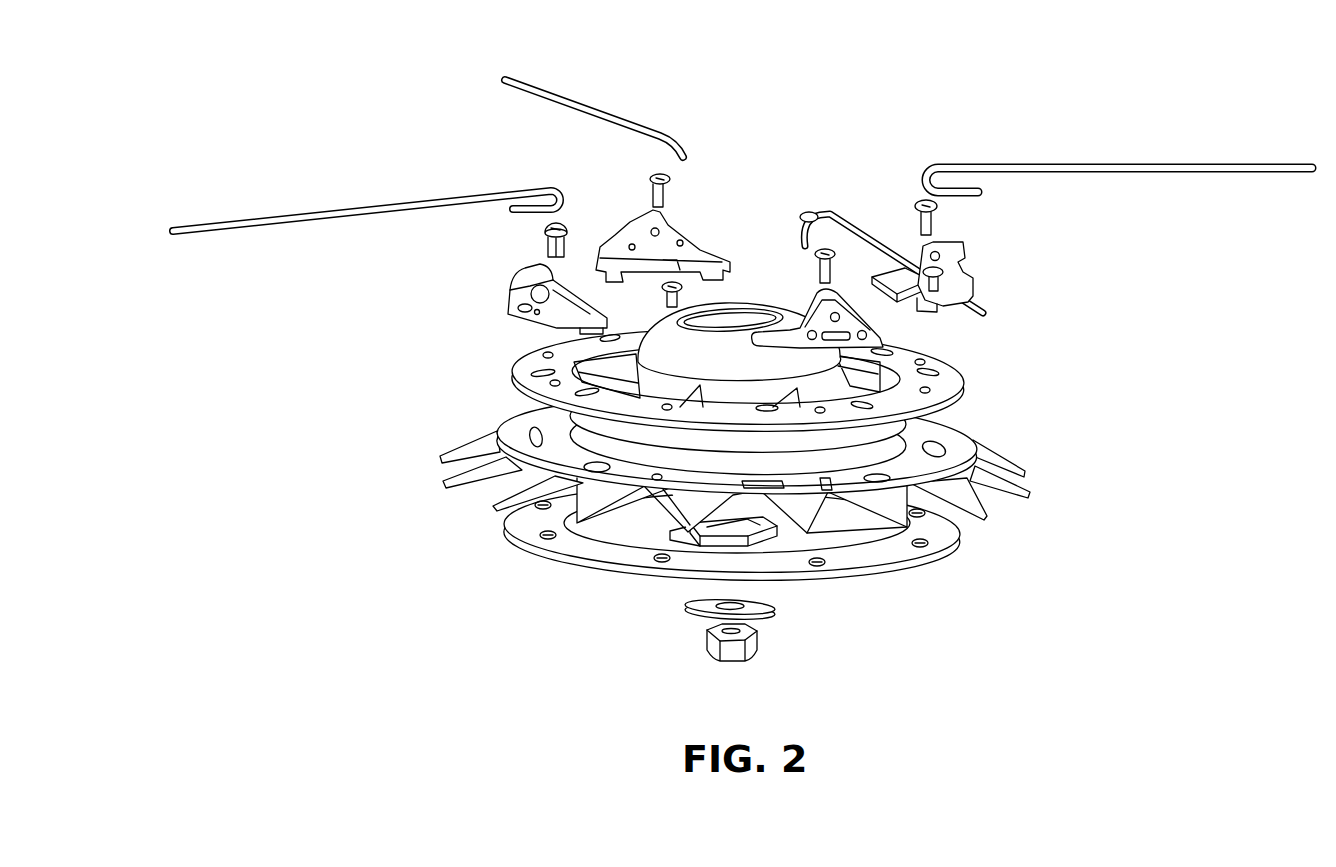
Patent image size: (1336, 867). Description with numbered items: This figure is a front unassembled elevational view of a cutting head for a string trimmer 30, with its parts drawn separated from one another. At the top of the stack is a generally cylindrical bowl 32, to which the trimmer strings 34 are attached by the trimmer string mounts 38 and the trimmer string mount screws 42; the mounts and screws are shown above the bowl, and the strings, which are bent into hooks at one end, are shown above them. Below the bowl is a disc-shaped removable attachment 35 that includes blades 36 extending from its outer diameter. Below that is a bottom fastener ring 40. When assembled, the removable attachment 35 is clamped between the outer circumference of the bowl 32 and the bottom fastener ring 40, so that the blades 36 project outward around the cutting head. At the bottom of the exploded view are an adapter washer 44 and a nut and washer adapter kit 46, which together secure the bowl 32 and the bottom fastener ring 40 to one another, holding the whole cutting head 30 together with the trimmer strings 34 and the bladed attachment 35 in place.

The cutting head for a string trimmer 30 is at (955, 42).
The generally cylindrical bowl 32 is at (950, 376).
The trimmer strings 34 is at (1122, 165).
The removable attachment 35 is at (950, 440).
The blades 36 is at (985, 463).
The trimmer string mounts 38 is at (965, 272).
The bottom fastener ring 40 is at (947, 532).
The trimmer string mount screws 42 is at (667, 182).
The adapter washer 44 is at (763, 517).
The nut and washer adapter kit 46 is at (777, 593).